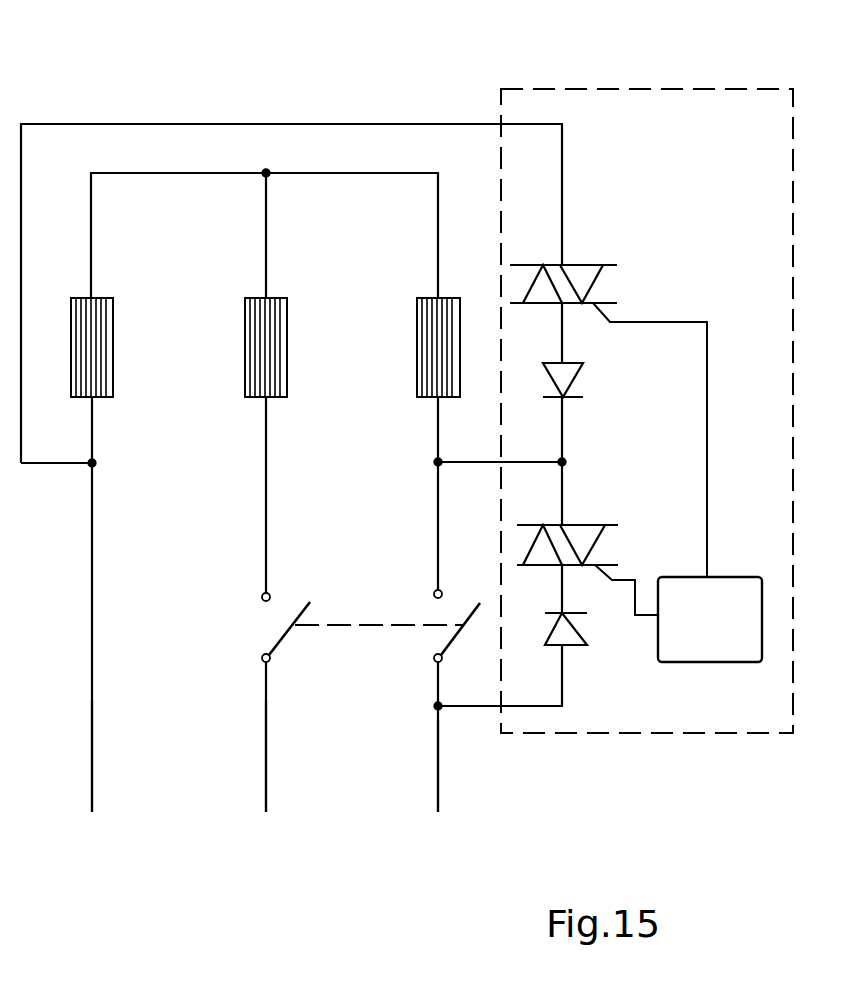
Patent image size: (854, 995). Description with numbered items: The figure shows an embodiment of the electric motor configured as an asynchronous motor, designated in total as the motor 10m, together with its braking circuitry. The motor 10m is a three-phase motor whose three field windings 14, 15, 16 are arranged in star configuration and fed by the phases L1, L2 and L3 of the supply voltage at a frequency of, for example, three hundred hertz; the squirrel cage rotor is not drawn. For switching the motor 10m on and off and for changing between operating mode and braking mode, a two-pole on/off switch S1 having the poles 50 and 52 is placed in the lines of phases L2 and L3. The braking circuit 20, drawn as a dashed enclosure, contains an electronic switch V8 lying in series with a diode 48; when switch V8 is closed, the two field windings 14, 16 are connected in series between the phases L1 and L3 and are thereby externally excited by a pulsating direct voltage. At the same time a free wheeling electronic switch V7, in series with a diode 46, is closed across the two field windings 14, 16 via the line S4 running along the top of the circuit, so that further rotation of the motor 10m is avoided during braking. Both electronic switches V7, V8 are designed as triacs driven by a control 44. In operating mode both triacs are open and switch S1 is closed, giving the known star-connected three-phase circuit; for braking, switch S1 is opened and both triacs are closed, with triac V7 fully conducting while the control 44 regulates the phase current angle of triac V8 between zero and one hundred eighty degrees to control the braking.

The asynchronous motor 10m is at (120, 105).
The field winding 14 is at (96, 348).
The field winding 15 is at (283, 350).
The field winding 16 is at (432, 350).
The braking circuit 20 is at (670, 127).
The control 44 is at (717, 608).
The diode 46 is at (565, 375).
The diode 48 is at (575, 643).
The pole 50 is at (275, 630).
The pole 52 is at (437, 617).
The on/off switch S1 is at (353, 657).
The connecting line S4 is at (340, 124).
The free wheeling electronic switch V7 is at (603, 280).
The electronic switch V8 is at (585, 538).
The phase L1 is at (96, 775).
The phase L2 is at (272, 775).
The phase L3 is at (446, 785).